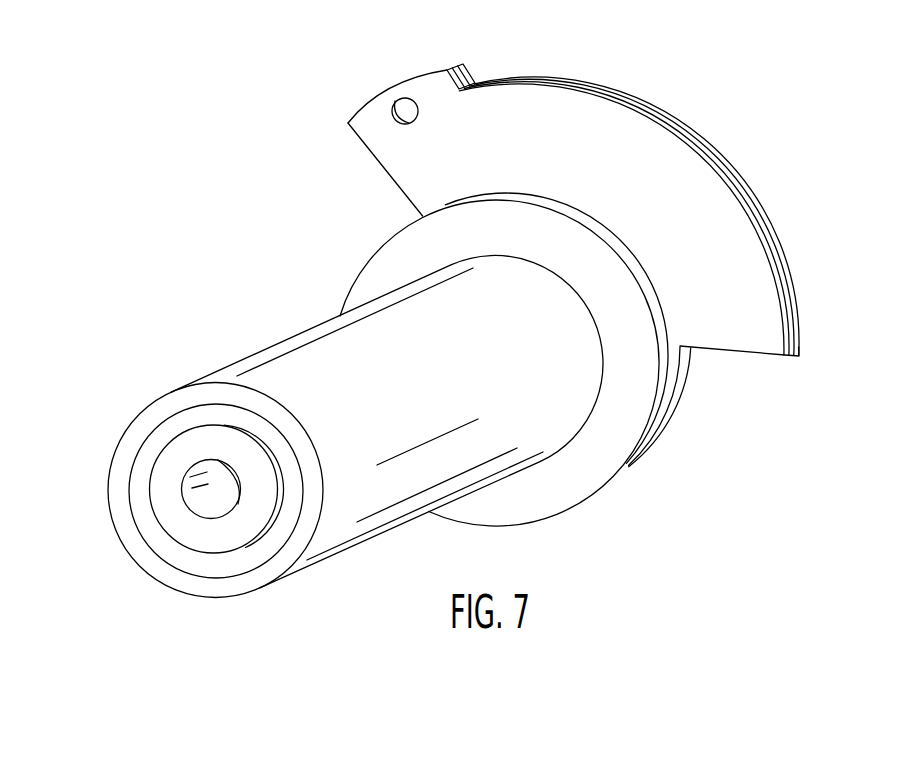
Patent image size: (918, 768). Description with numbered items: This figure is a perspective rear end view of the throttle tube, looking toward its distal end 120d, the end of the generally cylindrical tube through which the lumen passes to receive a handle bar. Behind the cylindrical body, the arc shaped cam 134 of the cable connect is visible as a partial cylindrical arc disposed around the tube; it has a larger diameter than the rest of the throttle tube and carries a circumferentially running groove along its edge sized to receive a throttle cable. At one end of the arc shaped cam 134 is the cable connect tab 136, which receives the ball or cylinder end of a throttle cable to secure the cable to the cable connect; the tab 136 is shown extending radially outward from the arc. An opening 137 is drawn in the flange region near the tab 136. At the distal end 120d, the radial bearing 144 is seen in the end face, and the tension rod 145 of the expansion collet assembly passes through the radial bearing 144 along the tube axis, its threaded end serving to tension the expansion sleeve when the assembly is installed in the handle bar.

The arc shaped cam 134 is at (737, 233).
The cable connect tab 136 is at (440, 84).
The hole 137 is at (392, 116).
The distal end 120d is at (150, 405).
The radial bearing 144 is at (140, 478).
The tension rod 145 is at (172, 512).